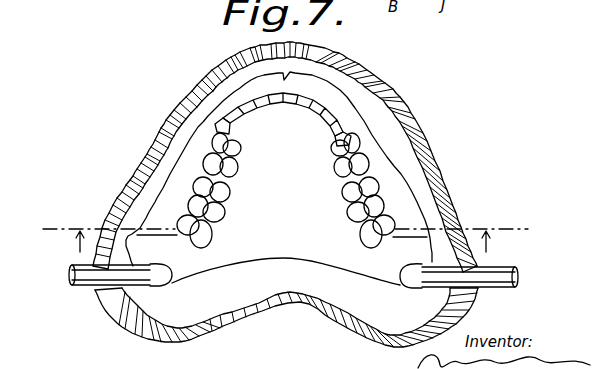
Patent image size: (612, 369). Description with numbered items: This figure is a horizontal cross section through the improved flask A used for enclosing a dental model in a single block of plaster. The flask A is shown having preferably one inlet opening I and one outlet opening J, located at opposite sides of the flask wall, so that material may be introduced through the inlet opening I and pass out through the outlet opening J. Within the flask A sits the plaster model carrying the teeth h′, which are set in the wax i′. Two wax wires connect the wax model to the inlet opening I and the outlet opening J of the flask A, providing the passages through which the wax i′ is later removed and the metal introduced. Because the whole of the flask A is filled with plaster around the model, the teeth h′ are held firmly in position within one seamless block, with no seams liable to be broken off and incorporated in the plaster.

The flask A is at (399, 128).
The teeth h′ is at (175, 186).
The outlet opening J is at (97, 267).
The inlet opening I is at (474, 264).
The wax i′ is at (247, 251).